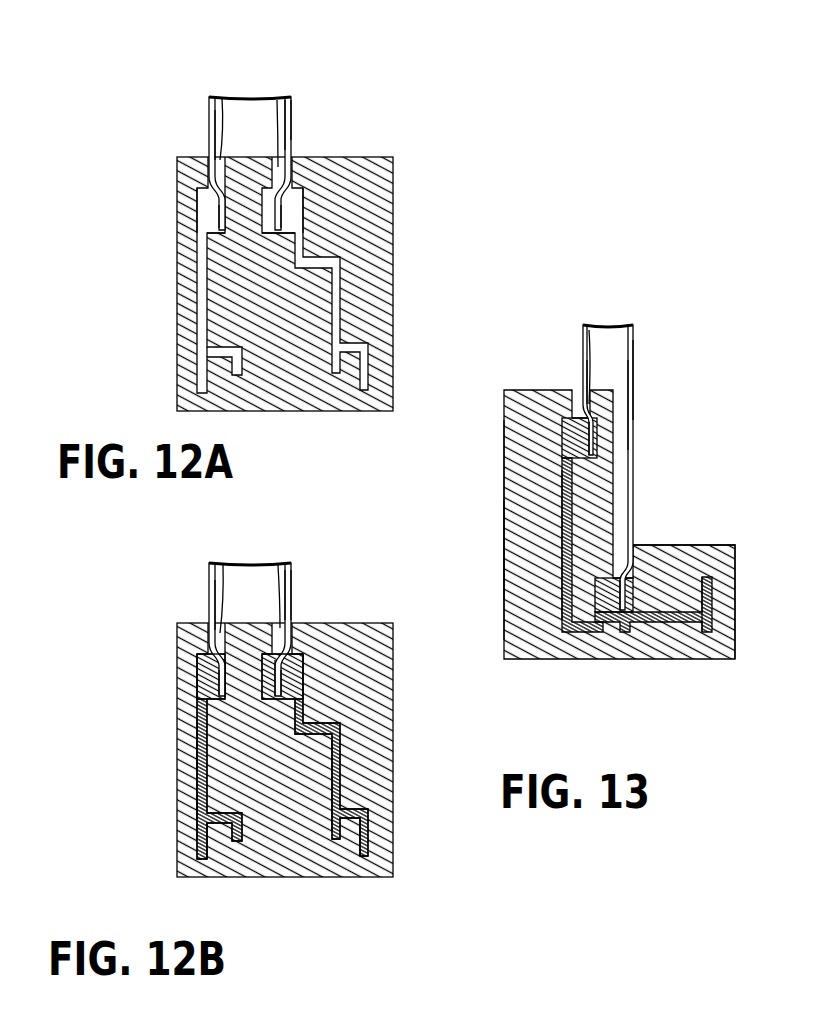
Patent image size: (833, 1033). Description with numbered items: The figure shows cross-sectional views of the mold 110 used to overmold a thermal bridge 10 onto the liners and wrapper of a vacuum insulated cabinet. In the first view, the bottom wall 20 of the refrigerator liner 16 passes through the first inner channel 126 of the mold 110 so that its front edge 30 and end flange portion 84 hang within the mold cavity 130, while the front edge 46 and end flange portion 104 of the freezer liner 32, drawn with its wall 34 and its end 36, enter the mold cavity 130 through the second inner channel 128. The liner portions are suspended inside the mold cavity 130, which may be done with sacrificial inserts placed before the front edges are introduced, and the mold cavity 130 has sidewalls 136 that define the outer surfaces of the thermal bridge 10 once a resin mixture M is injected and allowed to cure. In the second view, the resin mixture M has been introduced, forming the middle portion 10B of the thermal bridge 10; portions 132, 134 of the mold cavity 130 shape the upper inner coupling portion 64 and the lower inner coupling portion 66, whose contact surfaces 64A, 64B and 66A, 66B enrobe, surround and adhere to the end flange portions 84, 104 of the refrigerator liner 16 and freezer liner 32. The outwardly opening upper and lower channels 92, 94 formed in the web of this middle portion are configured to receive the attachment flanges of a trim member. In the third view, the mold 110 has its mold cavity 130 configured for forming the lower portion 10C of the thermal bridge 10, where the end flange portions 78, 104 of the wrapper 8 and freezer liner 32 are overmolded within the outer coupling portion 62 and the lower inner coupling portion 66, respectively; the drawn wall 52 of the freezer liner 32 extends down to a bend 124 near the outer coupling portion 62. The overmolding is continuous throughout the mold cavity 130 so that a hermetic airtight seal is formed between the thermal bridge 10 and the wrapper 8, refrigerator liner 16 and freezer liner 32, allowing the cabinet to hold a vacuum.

In FIG. 13, the wrapper 8 is at (648, 388).
In FIG. 12B, the thermal bridge 10 is at (195, 773).
In FIG. 13, the thermal bridge 10 is at (555, 503).
In FIG. 12B, the middle portion of the thermal bridge 10B is at (195, 803).
In FIG. 13, the lower portion of the thermal bridge 10C is at (555, 547).
In FIG. 12A, the refrigerator liner 16 is at (204, 113).
In FIG. 12B, the refrigerator liner 16 is at (207, 578).
In FIG. 12A, the bottom wall 20 is at (213, 133).
In FIG. 12B, the bottom wall 20 is at (210, 597).
In FIG. 12A, the front edge 30 is at (212, 236).
In FIG. 12A, the freezer liner 32 is at (299, 133).
In FIG. 12B, the freezer liner 32 is at (303, 582).
In FIG. 13, the freezer liner 32 is at (572, 346).
In FIG. 12A, the tube wall 34 is at (292, 118).
In FIG. 12B, the tube wall 34 is at (292, 605).
In FIG. 13, the tube end 36 is at (580, 400).
In FIG. 12A, the front edge 46 is at (303, 238).
In FIG. 13, the tube wall 52 is at (636, 362).
In FIG. 13, the outer coupling portion 62 is at (648, 592).
In FIG. 12B, the upper inner coupling portion 64 is at (198, 665).
In FIG. 12B, the contact surface 64A is at (203, 660).
In FIG. 12B, the contact surface 64B is at (233, 658).
In FIG. 12B, the lower inner coupling portion 66 is at (313, 667).
In FIG. 13, the lower inner coupling portion 66 is at (602, 446).
In FIG. 12B, the contact surface 66A is at (263, 658).
In FIG. 12B, the contact surface 66B is at (300, 658).
In FIG. 13, the end flange portion 78 is at (633, 605).
In FIG. 12A, the end flange portion 84 is at (221, 206).
In FIG. 12B, the end flange portion 84 is at (232, 692).
In FIG. 12B, the upper channel 92 is at (215, 850).
In FIG. 12B, the lower channel 94 is at (352, 850).
In FIG. 12A, the end flange portion 104 is at (280, 208).
In FIG. 12B, the end flange portion 104 is at (304, 720).
In FIG. 13, the end flange portion 104 is at (570, 439).
In FIG. 12A, the mold 110 is at (398, 156).
In FIG. 12B, the mold 110 is at (400, 828).
In FIG. 13, the mold 110 is at (710, 525).
In FIG. 13, the tube bend 124 is at (635, 552).
In FIG. 12A, the first inner channel 126 is at (222, 98).
In FIG. 12B, the first inner channel 126 is at (223, 564).
In FIG. 12A, the second inner channel 128 is at (277, 100).
In FIG. 12B, the second inner channel 128 is at (292, 600).
In FIG. 13, the second inner channel 128 is at (578, 388).
In FIG. 12A, the mold cavity 130 is at (337, 303).
In FIG. 12B, the mold cavity 130 is at (203, 810).
In FIG. 13, the mold cavity 130 is at (568, 525).
In FIG. 12A, the portion of the mold cavity 132 is at (204, 213).
In FIG. 12B, the portion of the mold cavity 132 is at (220, 682).
In FIG. 12A, the portion of the mold cavity 134 is at (300, 218).
In FIG. 12B, the portion of the mold cavity 134 is at (305, 702).
In FIG. 12A, the sidewalls 136 is at (204, 345).
In FIG. 12B, the resin mixture M is at (202, 738).
In FIG. 13, the resin mixture M is at (568, 480).